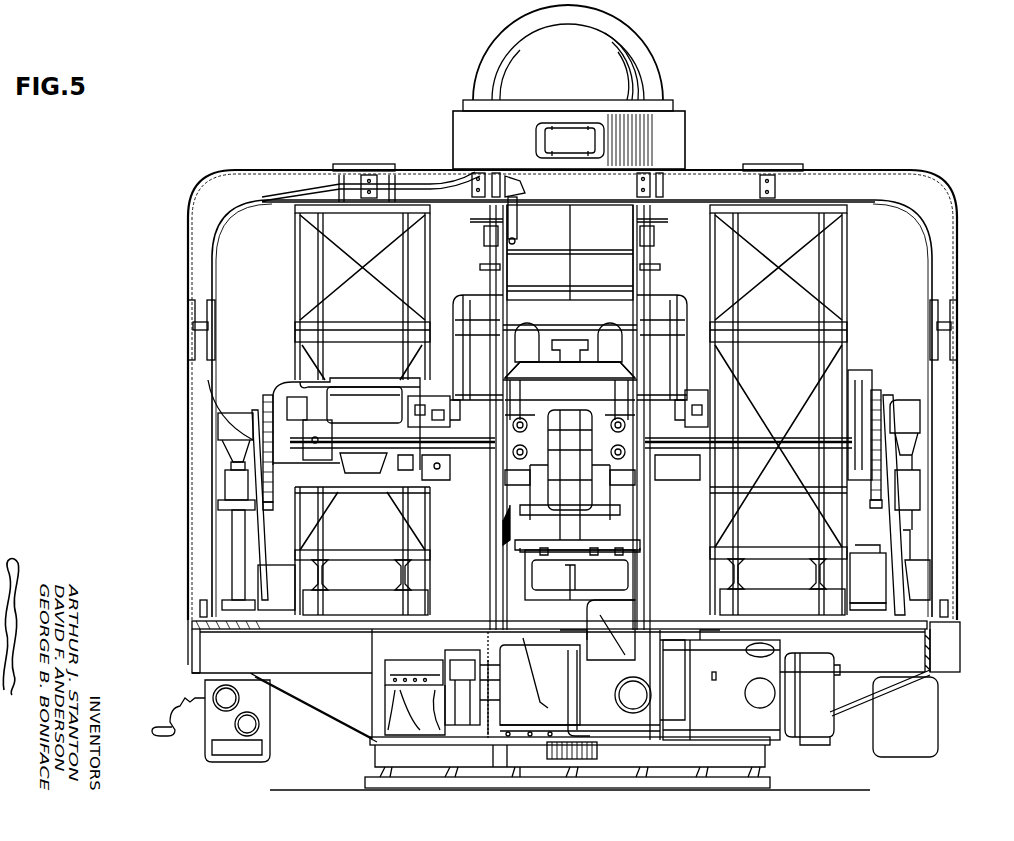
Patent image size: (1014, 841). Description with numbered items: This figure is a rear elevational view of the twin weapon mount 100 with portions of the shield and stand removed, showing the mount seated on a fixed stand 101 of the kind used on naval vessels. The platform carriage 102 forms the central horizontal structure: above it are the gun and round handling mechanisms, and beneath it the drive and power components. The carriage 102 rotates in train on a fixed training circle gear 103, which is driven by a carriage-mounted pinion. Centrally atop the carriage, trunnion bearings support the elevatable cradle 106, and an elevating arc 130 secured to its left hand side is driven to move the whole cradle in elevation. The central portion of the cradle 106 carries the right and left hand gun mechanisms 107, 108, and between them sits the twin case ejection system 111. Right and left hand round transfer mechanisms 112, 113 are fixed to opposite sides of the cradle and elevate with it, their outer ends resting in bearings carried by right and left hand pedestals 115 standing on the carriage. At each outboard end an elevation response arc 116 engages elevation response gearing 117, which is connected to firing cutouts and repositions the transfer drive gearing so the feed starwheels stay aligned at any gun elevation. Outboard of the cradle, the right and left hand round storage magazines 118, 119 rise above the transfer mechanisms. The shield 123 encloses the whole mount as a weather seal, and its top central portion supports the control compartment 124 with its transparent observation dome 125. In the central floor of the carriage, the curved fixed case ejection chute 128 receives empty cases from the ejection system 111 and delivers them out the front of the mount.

The twin weapon mount 100 is at (930, 158).
The fixed stand 101 is at (758, 787).
The platform carriage 102 is at (895, 656).
The training circle gear 103 is at (583, 760).
The elevatable cradle 106 is at (535, 375).
The right hand gun mechanism 107 is at (632, 479).
The left hand gun mechanism 108 is at (505, 478).
The twin case ejection system 111 is at (610, 510).
The right hand round transfer mechanism 112 is at (700, 390).
The left hand round transfer mechanism 113 is at (433, 394).
The pedestal 115 is at (250, 549).
The elevation response arc 116 is at (263, 397).
The elevation response gearing 117 is at (268, 510).
The right hand round storage magazine 118 is at (850, 276).
The left hand round storage magazine 119 is at (292, 276).
The shield 123 is at (188, 212).
The control compartment 124 is at (688, 136).
The transparent observation dome 125 is at (650, 52).
The fixed case ejection chute 128 is at (612, 571).
The elevating arc 130 is at (502, 516).